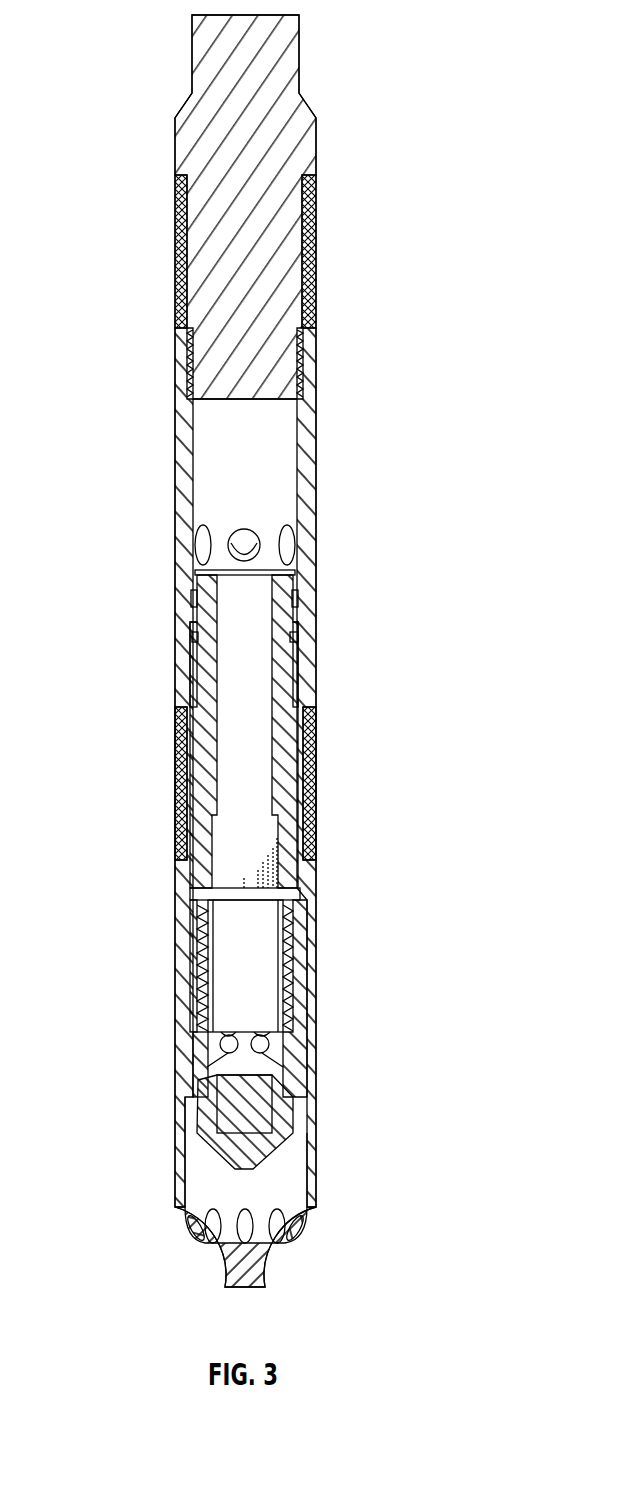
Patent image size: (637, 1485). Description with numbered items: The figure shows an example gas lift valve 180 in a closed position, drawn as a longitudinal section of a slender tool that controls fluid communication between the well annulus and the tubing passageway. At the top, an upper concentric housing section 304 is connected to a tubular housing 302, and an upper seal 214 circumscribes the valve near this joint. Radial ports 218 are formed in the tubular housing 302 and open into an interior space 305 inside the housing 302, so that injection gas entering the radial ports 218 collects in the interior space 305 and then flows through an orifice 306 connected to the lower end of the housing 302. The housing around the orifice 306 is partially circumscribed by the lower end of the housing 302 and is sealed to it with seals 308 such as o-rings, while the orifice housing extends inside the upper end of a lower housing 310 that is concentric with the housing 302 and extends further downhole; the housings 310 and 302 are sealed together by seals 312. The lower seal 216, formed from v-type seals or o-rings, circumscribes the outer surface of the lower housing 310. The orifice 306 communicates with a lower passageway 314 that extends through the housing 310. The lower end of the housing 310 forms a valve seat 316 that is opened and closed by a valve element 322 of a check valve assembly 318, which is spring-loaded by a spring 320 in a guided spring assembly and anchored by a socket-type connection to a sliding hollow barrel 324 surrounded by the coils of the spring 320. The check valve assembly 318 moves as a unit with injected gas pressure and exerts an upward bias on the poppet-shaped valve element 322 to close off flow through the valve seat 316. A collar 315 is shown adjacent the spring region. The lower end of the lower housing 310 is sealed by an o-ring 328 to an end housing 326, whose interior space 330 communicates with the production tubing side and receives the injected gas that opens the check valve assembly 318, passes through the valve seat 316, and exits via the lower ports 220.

The gas lift valve 180 is at (364, 53).
The upper concentric housing section 304 is at (297, 103).
The upper seal 214 is at (320, 175).
The tubular housing 302 is at (316, 448).
The interior space 305 is at (280, 418).
The radial ports 218 is at (287, 527).
The seals 308 is at (300, 605).
The seals 312 is at (298, 637).
The lower housing 310 is at (293, 683).
The orifice 306 is at (232, 712).
The lower seal 216 is at (320, 707).
The lower passageway 314 is at (267, 865).
The barrel 324 is at (195, 937).
The o-ring 328 is at (303, 975).
The spring 320 is at (195, 1020).
The collar 315 is at (307, 1025).
The valve seat 316 is at (195, 1087).
The check valve assembly 318 is at (298, 1102).
The valve element 322 is at (200, 1117).
The interior space 330 is at (255, 1190).
The end housing 326 is at (207, 1263).
The lower ports 220 is at (275, 1227).